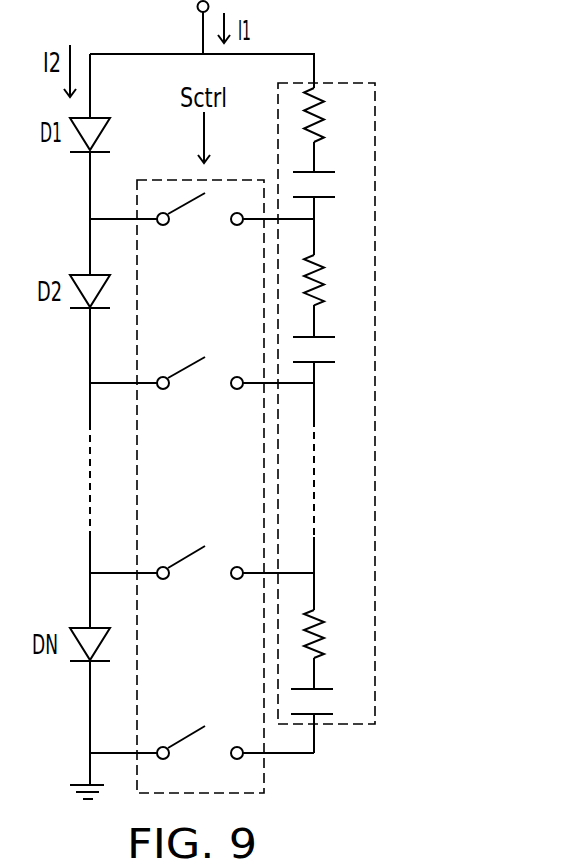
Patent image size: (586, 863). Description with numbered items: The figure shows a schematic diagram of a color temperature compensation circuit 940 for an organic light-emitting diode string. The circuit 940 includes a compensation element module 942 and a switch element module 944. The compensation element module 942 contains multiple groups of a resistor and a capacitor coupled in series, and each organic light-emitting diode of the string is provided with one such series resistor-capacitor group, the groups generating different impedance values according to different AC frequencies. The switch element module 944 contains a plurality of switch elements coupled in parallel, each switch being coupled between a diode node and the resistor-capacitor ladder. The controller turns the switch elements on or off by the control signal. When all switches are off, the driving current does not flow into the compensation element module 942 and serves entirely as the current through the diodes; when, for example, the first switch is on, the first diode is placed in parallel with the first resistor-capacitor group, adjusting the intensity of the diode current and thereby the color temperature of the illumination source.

The color temperature compensation circuit 940 is at (307, 410).
The compensation element module 942 is at (376, 123).
The switch element module 944 is at (240, 178).